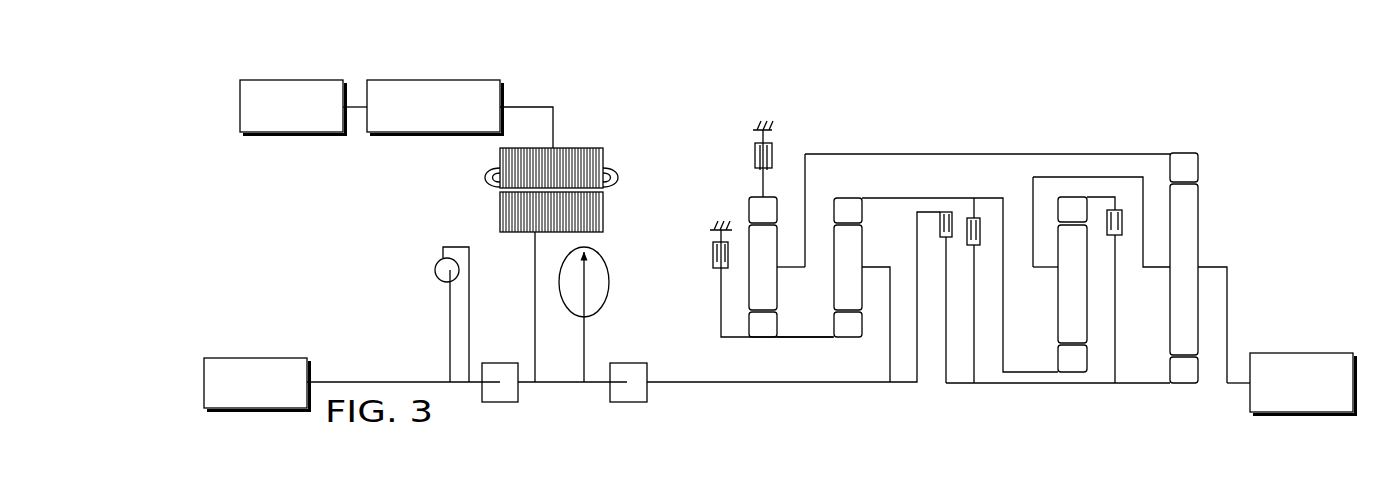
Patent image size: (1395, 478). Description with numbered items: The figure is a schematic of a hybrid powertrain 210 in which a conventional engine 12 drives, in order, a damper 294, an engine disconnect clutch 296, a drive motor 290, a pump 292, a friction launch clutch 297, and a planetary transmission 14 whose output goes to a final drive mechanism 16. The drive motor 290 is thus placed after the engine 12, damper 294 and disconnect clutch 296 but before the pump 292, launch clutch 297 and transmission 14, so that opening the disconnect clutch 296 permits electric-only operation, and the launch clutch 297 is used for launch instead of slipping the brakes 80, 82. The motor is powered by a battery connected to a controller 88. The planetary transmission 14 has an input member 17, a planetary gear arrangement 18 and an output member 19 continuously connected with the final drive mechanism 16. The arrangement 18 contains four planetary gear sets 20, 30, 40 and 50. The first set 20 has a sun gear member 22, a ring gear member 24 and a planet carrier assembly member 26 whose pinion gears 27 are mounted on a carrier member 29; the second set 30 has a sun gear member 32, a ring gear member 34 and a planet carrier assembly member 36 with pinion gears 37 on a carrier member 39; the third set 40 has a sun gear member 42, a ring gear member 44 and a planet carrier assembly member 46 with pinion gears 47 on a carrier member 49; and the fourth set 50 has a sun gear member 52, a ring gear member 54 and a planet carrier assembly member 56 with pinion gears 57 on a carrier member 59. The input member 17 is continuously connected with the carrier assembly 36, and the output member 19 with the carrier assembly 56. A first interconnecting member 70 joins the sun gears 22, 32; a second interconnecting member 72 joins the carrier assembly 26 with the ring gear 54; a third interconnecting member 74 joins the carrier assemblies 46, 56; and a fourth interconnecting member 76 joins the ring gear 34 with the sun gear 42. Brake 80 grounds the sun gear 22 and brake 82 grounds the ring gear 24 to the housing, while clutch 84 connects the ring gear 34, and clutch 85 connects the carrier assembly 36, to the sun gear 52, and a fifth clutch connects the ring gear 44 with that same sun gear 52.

The engine 12 is at (253, 350).
The planetary transmission 14 is at (989, 116).
The final drive mechanism 16 is at (1307, 339).
The input member 17 is at (838, 383).
The planetary gear arrangement 18 is at (1118, 116).
The output member 19 is at (1237, 381).
The planetary gear set 20 is at (745, 287).
The sun gear member 22 is at (763, 324).
The ring gear member 24 is at (763, 210).
The planet carrier assembly member 26 is at (786, 274).
The pinion gears 27 is at (763, 267).
The carrier member 29 is at (788, 250).
The planetary gear set 30 is at (830, 288).
The sun gear member 32 is at (848, 324).
The ring gear member 34 is at (848, 210).
The planet carrier assembly member 36 is at (873, 254).
The pinion gears 37 is at (848, 267).
The carrier member 39 is at (873, 268).
The planetary gear set 40 is at (1058, 309).
The sun gear member 42 is at (1072, 358).
The ring gear member 44 is at (1072, 209).
The planet carrier assembly member 46 is at (1046, 279).
The pinion gears 47 is at (1072, 284).
The carrier member 49 is at (1047, 266).
The planetary gear set 50 is at (1164, 292).
The sun gear member 52 is at (1184, 370).
The ring gear member 54 is at (1184, 167).
The planet carrier assembly member 56 is at (1209, 249).
The pinion gears 57 is at (1184, 269).
The carrier member 59 is at (1228, 267).
The first interconnecting member 70 is at (795, 338).
The second interconnecting member 72 is at (990, 153).
The third interconnecting member 74 is at (1094, 177).
The fourth interconnecting member 76 is at (925, 197).
The brake 80 is at (704, 252).
The brake 82 is at (748, 152).
The clutch 84 is at (986, 230).
The clutch 85 is at (958, 213).
The controller 88 is at (433, 135).
The powertrain 210 is at (660, 117).
The drive motor 290 is at (564, 137).
The pump 292 is at (611, 300).
The damper 294 is at (430, 272).
The engine disconnect clutch 296 is at (508, 358).
The friction launch clutch 297 is at (654, 373).